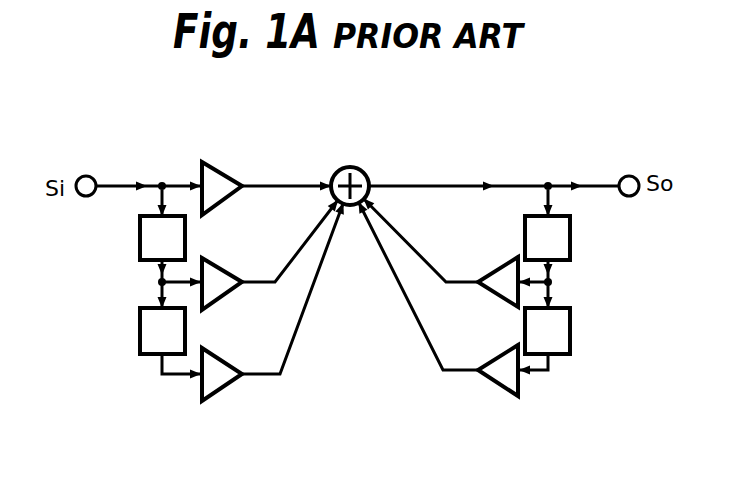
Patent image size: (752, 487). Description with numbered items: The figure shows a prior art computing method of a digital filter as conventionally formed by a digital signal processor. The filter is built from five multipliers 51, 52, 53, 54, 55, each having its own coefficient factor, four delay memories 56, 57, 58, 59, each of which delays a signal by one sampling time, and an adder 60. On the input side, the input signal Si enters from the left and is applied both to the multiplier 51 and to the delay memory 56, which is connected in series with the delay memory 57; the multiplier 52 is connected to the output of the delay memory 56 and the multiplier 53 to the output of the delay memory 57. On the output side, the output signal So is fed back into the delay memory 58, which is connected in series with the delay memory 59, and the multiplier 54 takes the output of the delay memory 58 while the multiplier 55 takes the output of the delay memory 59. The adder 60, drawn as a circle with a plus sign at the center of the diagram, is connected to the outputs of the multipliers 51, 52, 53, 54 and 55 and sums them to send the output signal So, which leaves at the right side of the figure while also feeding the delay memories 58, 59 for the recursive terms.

The multiplier 51 is at (201, 166).
The multiplier 52 is at (221, 263).
The multiplier 53 is at (221, 355).
The multiplier 54 is at (483, 269).
The multiplier 55 is at (483, 362).
The delay memory 56 is at (140, 241).
The delay memory 57 is at (140, 334).
The delay memory 58 is at (573, 230).
The delay memory 59 is at (573, 322).
The adder 60 is at (357, 167).